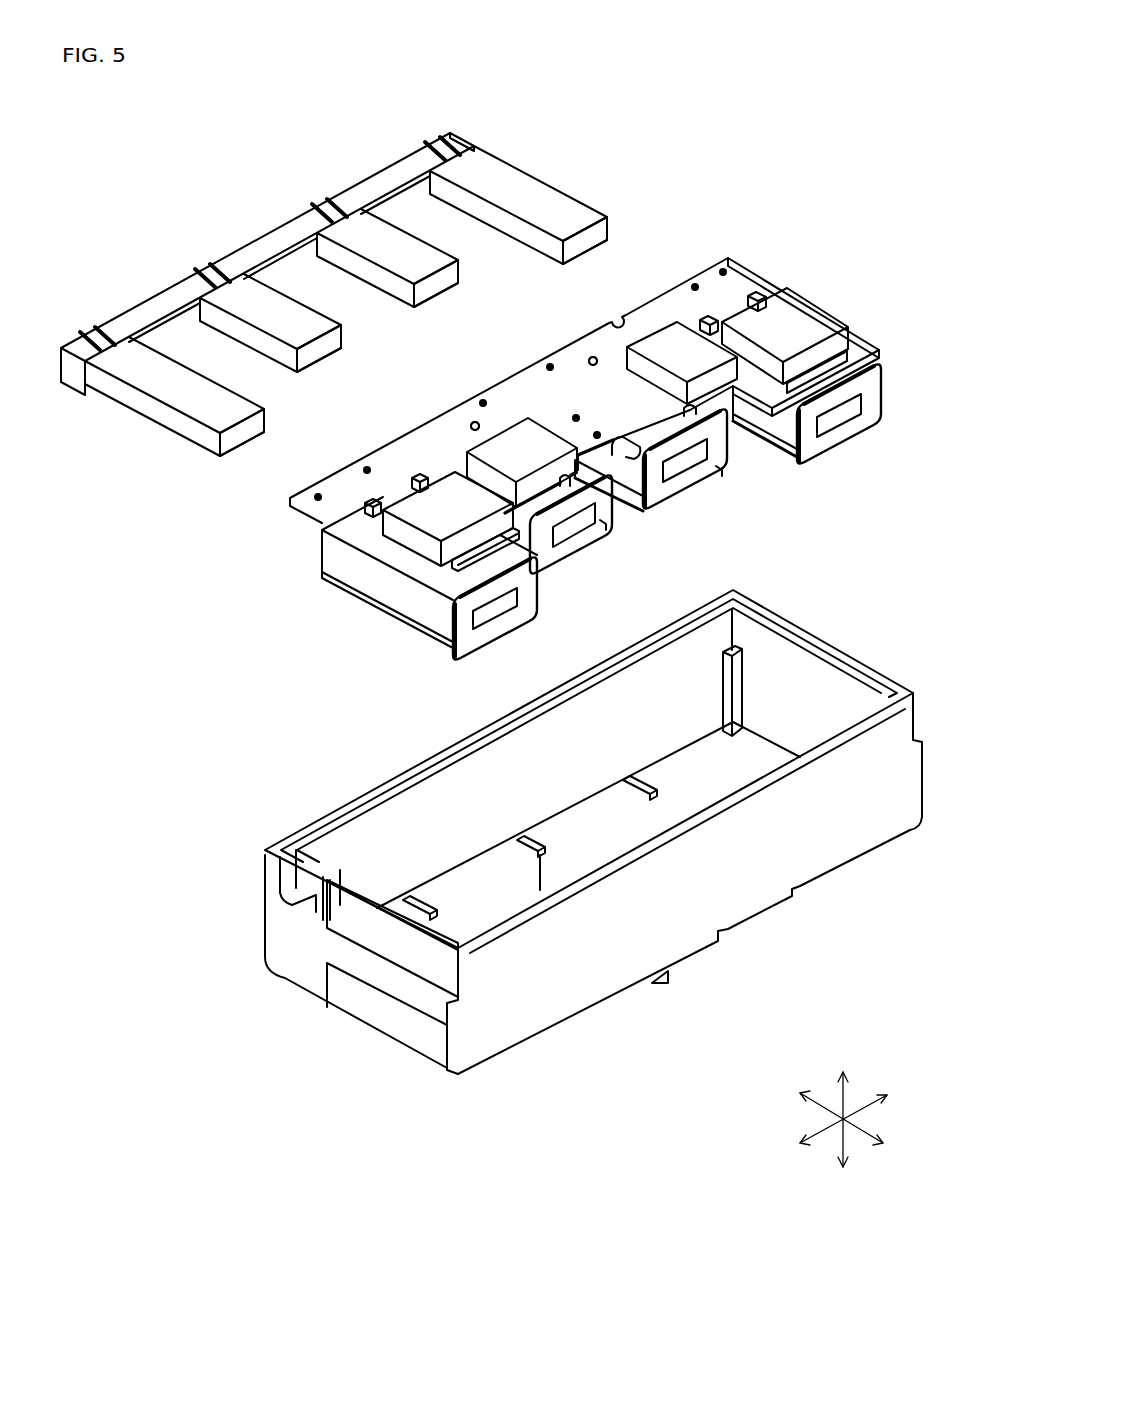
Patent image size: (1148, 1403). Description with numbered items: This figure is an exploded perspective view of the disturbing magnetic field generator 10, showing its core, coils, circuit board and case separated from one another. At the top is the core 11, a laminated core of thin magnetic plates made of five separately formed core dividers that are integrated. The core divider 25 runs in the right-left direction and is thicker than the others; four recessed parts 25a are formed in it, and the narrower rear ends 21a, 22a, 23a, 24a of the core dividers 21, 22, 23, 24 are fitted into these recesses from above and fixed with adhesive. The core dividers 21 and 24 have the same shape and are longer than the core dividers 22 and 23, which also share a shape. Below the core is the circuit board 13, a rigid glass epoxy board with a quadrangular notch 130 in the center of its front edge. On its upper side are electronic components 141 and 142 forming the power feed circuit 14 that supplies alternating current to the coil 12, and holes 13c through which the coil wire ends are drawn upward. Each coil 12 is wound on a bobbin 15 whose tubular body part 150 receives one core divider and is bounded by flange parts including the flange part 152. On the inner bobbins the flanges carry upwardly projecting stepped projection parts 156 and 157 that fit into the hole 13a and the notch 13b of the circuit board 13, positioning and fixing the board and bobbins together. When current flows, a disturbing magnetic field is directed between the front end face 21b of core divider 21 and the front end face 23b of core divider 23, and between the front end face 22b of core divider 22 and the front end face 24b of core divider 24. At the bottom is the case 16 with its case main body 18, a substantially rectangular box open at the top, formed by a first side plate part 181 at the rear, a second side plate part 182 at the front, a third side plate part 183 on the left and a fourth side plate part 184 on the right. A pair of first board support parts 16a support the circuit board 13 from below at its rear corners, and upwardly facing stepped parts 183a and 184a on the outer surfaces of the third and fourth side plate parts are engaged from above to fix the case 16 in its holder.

The disturbing magnetic field generator 10 is at (752, 126).
The core 11 is at (385, 178).
The core divider 25 is at (267, 264).
The recessed part 25a is at (433, 150).
The core divider 21 is at (548, 180).
The rear end 21a is at (452, 133).
The front end face 21b is at (604, 233).
The core divider 22 is at (382, 242).
The rear end 22a is at (343, 207).
The front end face 22b is at (440, 293).
The core divider 23 is at (272, 306).
The rear end 23a is at (228, 272).
The front end face 23b is at (322, 356).
The core divider 24 is at (170, 379).
The rear end 24a is at (100, 343).
The front end face 24b is at (248, 438).
The circuit board 13 is at (584, 370).
The hole 13a is at (590, 360).
The notch 13b is at (565, 478).
The hole 13c is at (723, 271).
The quadrangular notch 130 is at (750, 397).
The projection part 156 is at (593, 357).
The coil 12 is at (571, 536).
The power feed circuit 14 is at (379, 560).
The electronic component 141 is at (322, 552).
The electronic component 142 is at (372, 560).
The bobbin 15 is at (687, 536).
The tubular body part 150 is at (495, 615).
The flange part 152 is at (528, 622).
The projection part 157 is at (608, 530).
The case 16 is at (593, 814).
The case main body 18 is at (593, 814).
The first board support part 16a is at (735, 648).
The first side plate part 181 is at (497, 773).
The second side plate part 182 is at (710, 890).
The third side plate part 183 is at (310, 920).
The stepped part 183a is at (392, 965).
The fourth side plate part 184 is at (785, 685).
The stepped part 184a is at (918, 745).